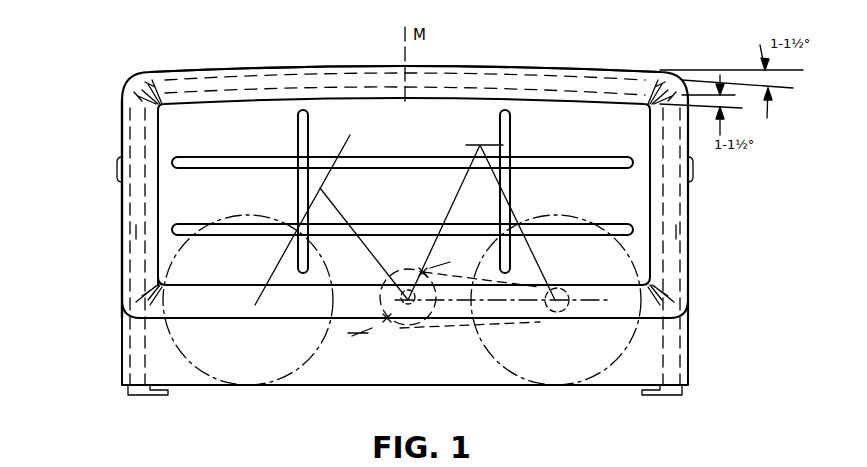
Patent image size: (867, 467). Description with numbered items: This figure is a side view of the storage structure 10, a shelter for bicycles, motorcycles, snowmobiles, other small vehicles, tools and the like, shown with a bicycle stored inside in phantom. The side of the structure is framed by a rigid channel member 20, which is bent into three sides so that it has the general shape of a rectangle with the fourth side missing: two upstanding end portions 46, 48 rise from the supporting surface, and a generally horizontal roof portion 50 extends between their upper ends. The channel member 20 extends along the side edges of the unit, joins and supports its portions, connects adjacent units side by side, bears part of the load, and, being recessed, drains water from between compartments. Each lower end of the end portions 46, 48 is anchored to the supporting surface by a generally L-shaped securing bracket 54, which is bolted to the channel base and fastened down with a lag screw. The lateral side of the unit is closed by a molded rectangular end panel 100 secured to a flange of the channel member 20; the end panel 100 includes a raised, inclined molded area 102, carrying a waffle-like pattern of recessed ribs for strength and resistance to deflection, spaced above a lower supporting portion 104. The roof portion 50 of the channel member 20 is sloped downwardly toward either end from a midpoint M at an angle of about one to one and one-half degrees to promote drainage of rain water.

The storage structure 10 is at (112, 67).
The channel member 20 is at (532, 79).
The upstanding end portion 46 is at (136, 232).
The upstanding end portion 48 is at (676, 232).
The roof portion 50 is at (445, 72).
The securing bracket 54 is at (160, 397).
The end panel 100 is at (136, 145).
The raised inclined molded area 102 is at (316, 135).
The lower supporting portion 104 is at (402, 300).